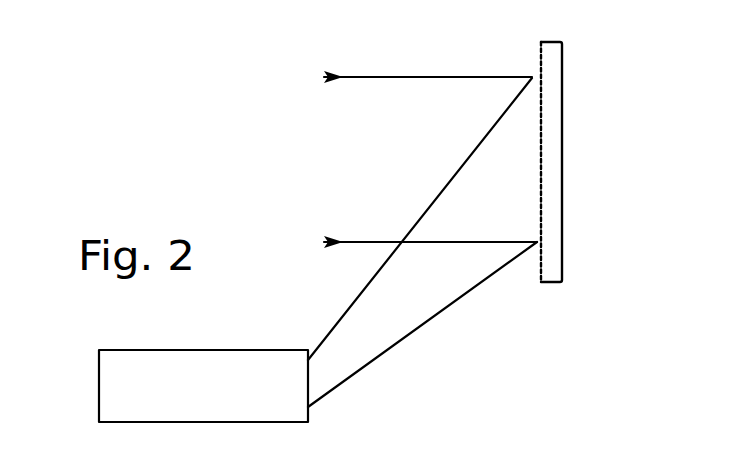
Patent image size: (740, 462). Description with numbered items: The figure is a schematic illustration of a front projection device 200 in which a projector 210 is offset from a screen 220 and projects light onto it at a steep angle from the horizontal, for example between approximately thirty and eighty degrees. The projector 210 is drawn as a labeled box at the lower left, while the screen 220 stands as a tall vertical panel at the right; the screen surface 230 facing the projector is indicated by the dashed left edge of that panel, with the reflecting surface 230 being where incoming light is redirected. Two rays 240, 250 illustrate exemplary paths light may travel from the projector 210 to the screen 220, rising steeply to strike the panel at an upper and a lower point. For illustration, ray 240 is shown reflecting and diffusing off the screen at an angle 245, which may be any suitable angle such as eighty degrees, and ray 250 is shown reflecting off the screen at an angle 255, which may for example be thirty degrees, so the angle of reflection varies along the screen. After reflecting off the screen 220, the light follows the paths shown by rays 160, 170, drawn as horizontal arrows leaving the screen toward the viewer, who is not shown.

The front projection device 200 is at (592, 66).
The projector 210 is at (255, 350).
The screen 220 is at (539, 155).
The diffractive / retroreflective surface of screen 230 is at (540, 56).
The ray 240 is at (381, 273).
The angle 245 is at (511, 86).
The ray 250 is at (386, 353).
The angle 255 is at (528, 232).
The ray 160 is at (383, 80).
The ray 170 is at (388, 240).